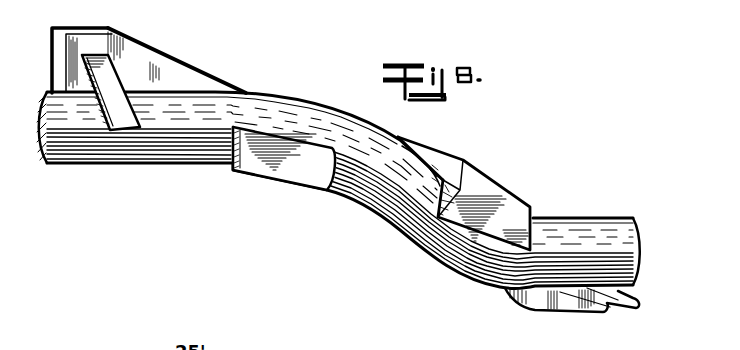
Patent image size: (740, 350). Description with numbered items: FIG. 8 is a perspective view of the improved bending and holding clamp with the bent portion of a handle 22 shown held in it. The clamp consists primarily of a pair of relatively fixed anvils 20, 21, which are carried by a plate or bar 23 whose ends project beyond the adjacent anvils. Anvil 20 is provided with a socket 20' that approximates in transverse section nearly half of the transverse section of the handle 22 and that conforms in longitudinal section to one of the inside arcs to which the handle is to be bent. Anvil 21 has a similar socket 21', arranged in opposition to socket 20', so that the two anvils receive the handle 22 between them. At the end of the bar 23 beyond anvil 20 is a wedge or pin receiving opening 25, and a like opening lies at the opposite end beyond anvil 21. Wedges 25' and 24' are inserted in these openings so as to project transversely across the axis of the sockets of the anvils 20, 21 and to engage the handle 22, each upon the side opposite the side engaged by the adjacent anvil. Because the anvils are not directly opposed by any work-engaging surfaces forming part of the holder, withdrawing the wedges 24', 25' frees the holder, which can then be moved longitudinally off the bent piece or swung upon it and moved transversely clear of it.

The anvil 20 is at (285, 173).
The socket 20' is at (260, 162).
The anvil 21 is at (464, 193).
The socket 21' is at (434, 157).
The handle 22 is at (152, 138).
The plate or bar 23 is at (213, 84).
The wedge 24' is at (572, 319).
The wedge or pin receiving opening 25 is at (105, 47).
The wedge 25' is at (128, 75).